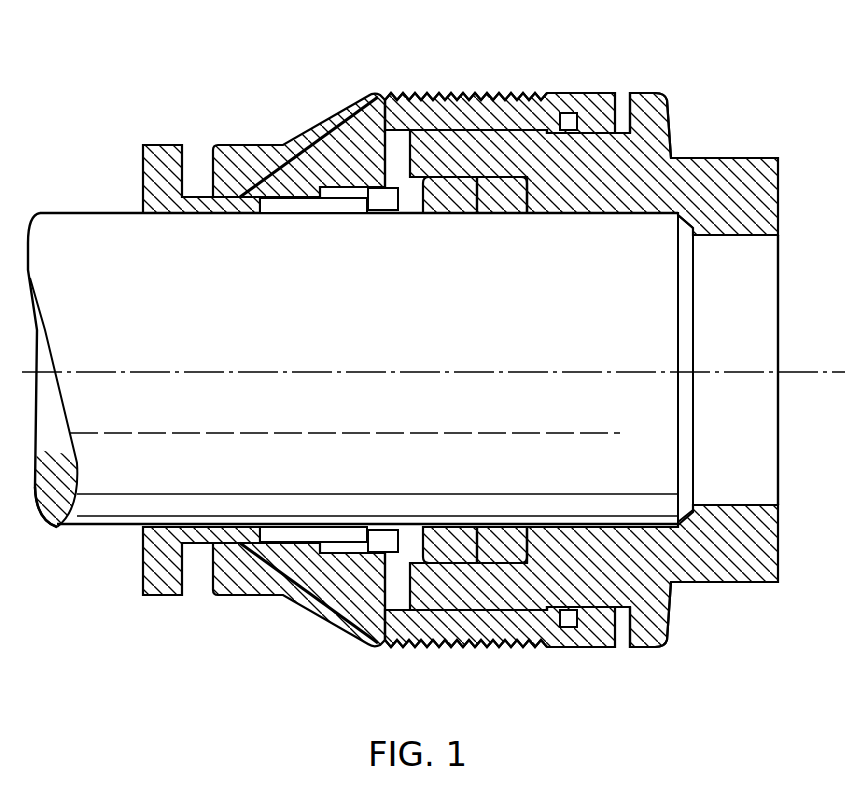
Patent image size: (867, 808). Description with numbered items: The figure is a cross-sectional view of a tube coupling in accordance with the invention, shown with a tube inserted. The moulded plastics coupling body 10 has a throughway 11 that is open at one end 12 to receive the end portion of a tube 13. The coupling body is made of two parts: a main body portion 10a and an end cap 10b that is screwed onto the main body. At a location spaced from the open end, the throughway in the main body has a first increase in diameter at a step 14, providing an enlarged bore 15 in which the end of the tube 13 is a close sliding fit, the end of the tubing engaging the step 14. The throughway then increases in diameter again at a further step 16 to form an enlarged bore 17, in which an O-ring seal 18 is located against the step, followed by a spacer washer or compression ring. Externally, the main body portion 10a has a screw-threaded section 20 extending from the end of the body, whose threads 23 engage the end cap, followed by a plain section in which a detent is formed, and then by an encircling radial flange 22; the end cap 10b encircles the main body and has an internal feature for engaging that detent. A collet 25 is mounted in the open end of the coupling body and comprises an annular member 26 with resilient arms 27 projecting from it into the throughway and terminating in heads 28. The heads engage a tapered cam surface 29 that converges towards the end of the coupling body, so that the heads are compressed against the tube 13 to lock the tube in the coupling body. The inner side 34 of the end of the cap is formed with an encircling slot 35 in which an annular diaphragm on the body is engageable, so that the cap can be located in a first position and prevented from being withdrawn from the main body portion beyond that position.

The tube coupling body 10 is at (343, 60).
The main body portion 10a is at (647, 125).
The end cap 10b is at (335, 117).
The throughway 11 is at (755, 270).
The open end 12 is at (240, 543).
The tube 13 is at (90, 507).
The step 14 is at (710, 223).
The enlarged bore 15 is at (703, 157).
The step 16 is at (530, 193).
The enlarged bore 17 is at (441, 170).
The O-ring seal 18 is at (495, 203).
The external screw-threaded section 20 is at (460, 130).
The radial flange 22 is at (647, 93).
The threads 23 is at (432, 130).
The collet 25 is at (143, 162).
The annular member 26 is at (157, 207).
The resilient arms 27 is at (272, 210).
The heads 28 is at (383, 200).
The tapered cam surface 29 is at (308, 130).
The inner side of the end of the cap 34 is at (387, 127).
The encircling slot 35 is at (567, 102).